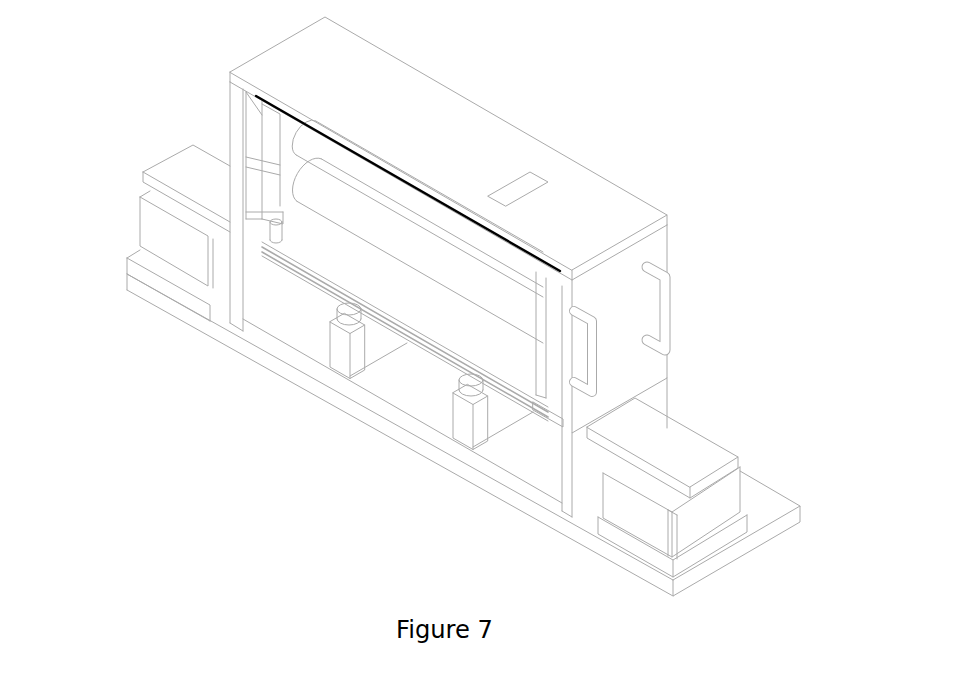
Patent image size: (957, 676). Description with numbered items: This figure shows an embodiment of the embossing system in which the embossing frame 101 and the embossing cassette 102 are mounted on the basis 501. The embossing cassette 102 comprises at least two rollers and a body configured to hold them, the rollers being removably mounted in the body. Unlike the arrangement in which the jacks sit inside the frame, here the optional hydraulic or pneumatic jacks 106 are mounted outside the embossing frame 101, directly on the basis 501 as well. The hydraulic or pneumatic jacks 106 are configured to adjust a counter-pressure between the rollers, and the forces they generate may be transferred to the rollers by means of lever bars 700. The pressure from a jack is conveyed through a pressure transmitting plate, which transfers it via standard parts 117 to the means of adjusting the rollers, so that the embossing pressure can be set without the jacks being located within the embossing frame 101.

The embossing cassette 102 is at (616, 183).
The standard parts 117 is at (276, 234).
The embossing frame 101 is at (262, 333).
The basis 501 is at (763, 493).
The lever bars 700 is at (168, 175).
The hydraulic or pneumatic jacks 106 is at (628, 523).